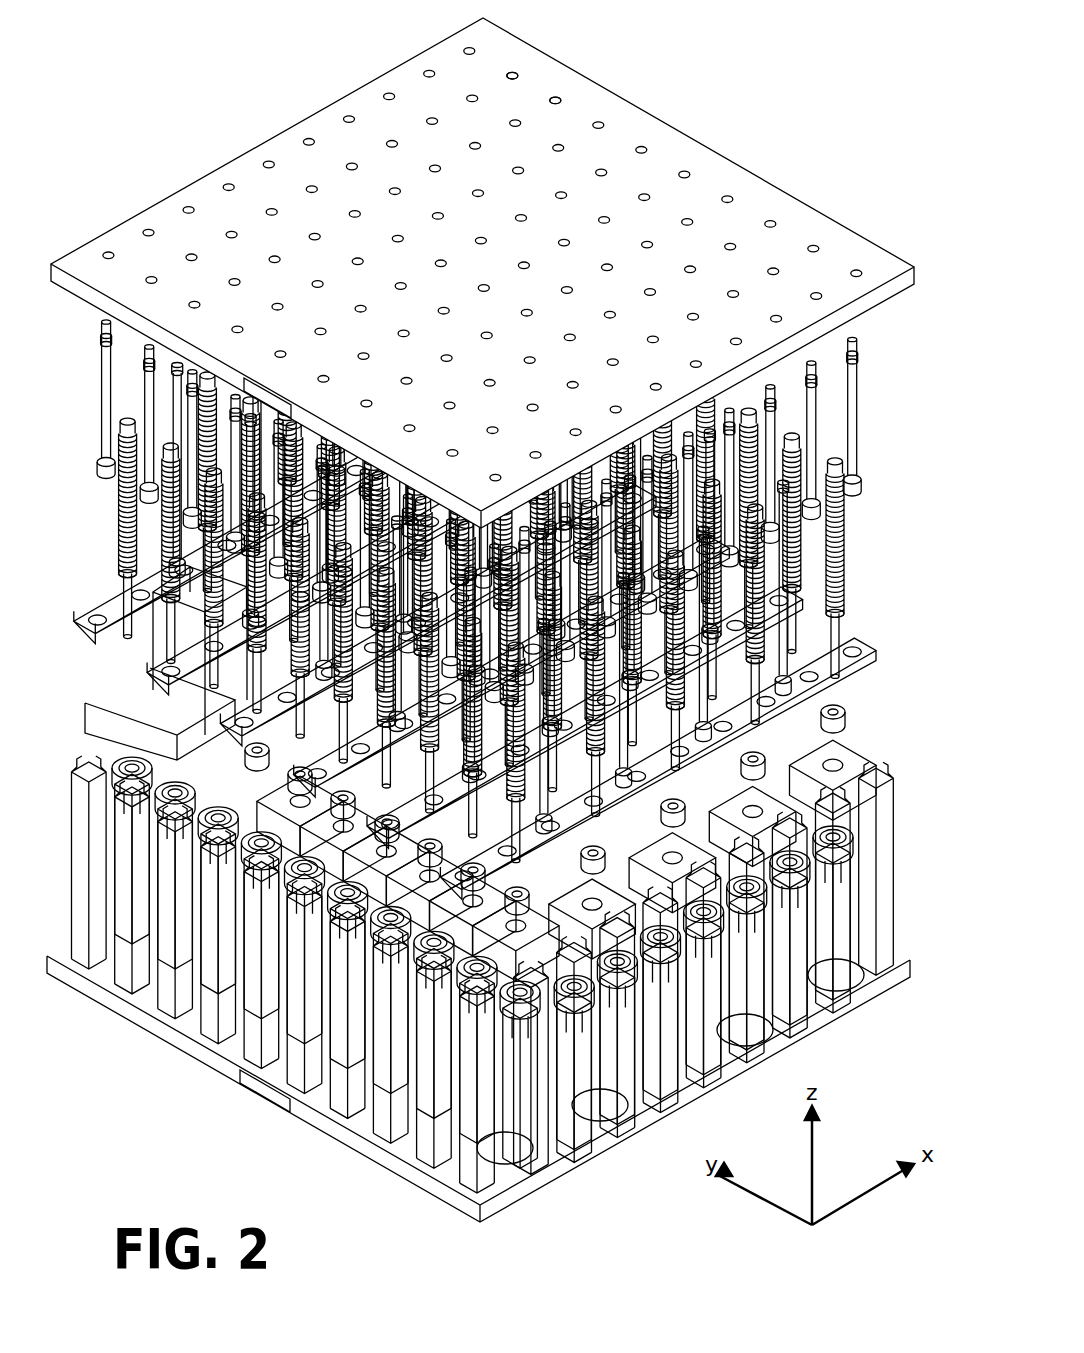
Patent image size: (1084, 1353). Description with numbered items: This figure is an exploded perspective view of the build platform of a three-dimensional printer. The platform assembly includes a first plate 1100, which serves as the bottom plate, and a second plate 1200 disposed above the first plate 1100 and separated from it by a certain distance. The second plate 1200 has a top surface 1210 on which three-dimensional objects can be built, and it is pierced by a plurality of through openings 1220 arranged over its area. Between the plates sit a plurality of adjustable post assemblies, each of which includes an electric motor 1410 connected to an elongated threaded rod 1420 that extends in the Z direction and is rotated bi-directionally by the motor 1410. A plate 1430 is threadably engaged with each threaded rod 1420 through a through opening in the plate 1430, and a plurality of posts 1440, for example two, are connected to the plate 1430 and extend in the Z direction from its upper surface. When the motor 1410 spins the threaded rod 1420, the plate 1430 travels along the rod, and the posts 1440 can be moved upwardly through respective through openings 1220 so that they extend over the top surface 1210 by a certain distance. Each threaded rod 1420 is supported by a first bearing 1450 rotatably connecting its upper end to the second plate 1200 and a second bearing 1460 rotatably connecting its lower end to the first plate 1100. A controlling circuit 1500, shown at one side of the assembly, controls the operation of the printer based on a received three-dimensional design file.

The first plate 1100 is at (908, 964).
The second plate 1200 is at (936, 270).
The top surface 1210 is at (514, 47).
The through opening 1220 is at (557, 99).
The electric motor 1410 is at (850, 748).
The threaded rod 1420 is at (846, 552).
The plate 1430 is at (872, 658).
The posts 1440 is at (818, 428).
The first bearing 1450 is at (855, 352).
The second bearing 1460 is at (843, 852).
The controlling circuit 1500 is at (118, 684).